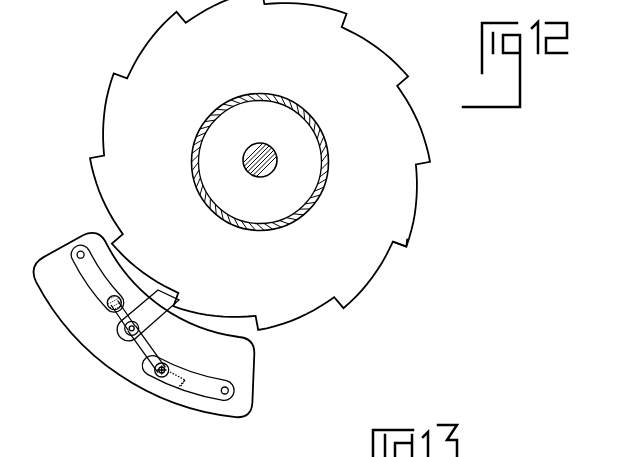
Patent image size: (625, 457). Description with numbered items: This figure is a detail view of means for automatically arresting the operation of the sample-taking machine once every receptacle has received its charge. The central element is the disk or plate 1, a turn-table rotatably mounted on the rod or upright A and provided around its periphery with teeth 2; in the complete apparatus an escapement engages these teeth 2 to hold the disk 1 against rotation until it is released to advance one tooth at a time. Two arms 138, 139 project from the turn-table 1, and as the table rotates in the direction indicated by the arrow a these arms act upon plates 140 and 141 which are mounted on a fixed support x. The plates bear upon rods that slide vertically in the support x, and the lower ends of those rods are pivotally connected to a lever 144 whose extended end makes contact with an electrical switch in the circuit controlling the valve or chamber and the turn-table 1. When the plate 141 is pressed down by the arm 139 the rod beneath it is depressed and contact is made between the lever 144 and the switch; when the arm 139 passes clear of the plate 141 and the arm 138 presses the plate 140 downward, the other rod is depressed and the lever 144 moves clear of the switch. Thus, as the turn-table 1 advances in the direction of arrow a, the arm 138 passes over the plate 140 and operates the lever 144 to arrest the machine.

The disk or plate 1 is at (388, 207).
The teeth 2 is at (396, 242).
The rod or upright A is at (260, 177).
The arrow a is at (471, 218).
The fixed support x is at (253, 368).
The arm 138 is at (161, 377).
The arm 139 is at (127, 333).
The plate 140 is at (213, 391).
The plate 141 is at (103, 287).
The lever 144 is at (148, 340).